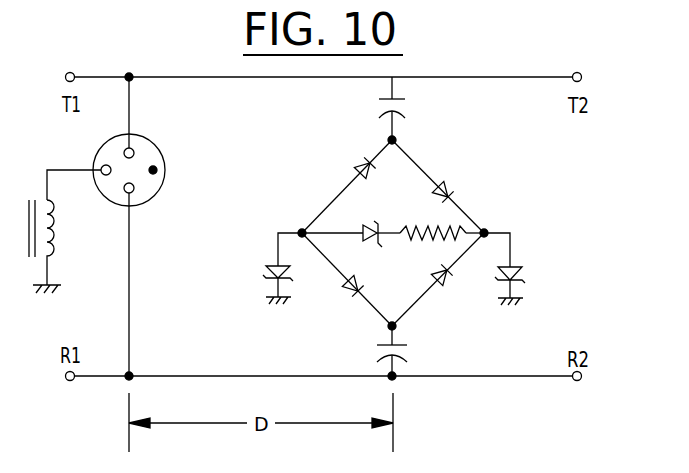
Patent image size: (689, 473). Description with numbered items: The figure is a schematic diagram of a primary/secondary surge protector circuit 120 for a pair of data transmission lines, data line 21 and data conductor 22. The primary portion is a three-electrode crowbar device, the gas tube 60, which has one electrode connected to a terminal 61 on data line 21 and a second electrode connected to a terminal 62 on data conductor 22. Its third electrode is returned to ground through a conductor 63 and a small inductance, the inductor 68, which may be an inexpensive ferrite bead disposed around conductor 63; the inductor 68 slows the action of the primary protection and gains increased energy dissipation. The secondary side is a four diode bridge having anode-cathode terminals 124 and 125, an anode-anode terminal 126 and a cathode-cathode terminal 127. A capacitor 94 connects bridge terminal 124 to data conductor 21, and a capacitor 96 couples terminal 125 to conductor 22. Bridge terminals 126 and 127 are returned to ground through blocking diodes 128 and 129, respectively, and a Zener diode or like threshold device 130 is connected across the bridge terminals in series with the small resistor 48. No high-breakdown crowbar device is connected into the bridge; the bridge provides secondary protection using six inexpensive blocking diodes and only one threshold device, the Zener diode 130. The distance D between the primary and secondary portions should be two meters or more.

The data line 21 is at (218, 79).
The data conductor 22 is at (324, 362).
The resistor 48 is at (438, 243).
The gas tube 60 is at (158, 144).
The terminal 61 is at (133, 80).
The terminal 62 is at (135, 374).
The conductor 63 is at (75, 167).
The inductor 68 is at (52, 230).
The capacitor 94 is at (405, 107).
The capacitor 96 is at (412, 354).
The surge protector circuit 120 is at (308, 166).
The anode-cathode terminal 124 is at (398, 140).
The anode-cathode terminal 125 is at (400, 328).
The anode-anode terminal 126 is at (298, 230).
The cathode-cathode terminal 127 is at (488, 228).
The blocking diode 128 is at (262, 273).
The blocking diode 129 is at (522, 273).
The Zener diode 130 is at (367, 218).